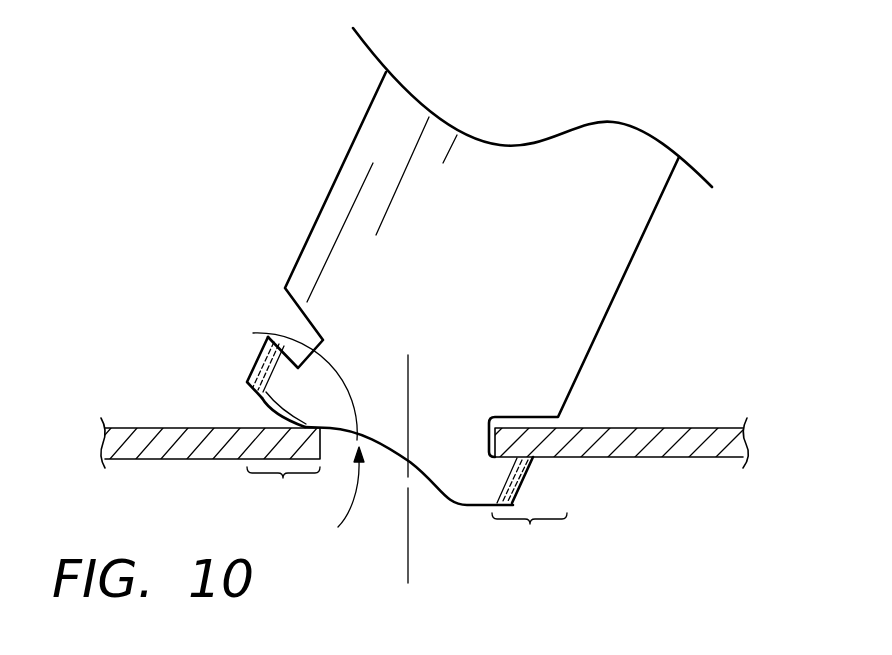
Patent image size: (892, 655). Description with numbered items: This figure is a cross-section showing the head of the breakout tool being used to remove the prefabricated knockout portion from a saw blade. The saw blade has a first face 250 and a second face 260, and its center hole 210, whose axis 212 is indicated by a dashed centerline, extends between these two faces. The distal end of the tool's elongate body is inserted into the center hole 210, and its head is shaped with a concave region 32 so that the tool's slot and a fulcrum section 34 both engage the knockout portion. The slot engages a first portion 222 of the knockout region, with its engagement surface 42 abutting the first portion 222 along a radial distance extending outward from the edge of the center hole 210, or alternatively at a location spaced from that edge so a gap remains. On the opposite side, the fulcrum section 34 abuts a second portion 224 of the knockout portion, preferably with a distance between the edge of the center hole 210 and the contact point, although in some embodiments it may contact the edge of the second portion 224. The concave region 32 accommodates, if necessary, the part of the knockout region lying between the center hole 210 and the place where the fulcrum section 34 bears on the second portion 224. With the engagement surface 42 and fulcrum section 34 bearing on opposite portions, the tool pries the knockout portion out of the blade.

The concave region 32 is at (268, 337).
The first fulcrum section 34 is at (260, 398).
The engagement surface 42 is at (520, 452).
The center hole 210 is at (308, 438).
The axis 212 is at (410, 560).
The first portion 222 is at (529, 530).
The second portion 224 is at (283, 485).
The first face 250 is at (162, 428).
The second face 260 is at (690, 457).